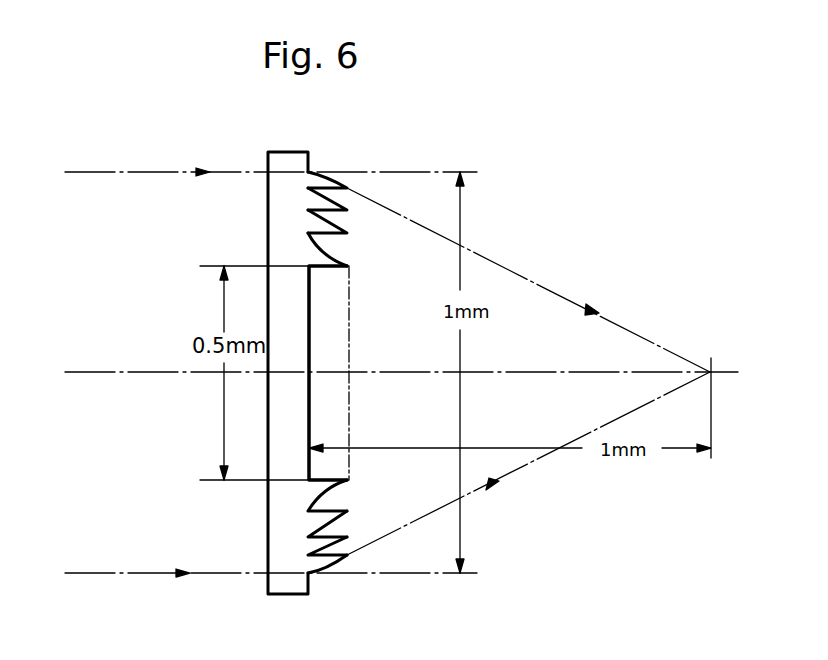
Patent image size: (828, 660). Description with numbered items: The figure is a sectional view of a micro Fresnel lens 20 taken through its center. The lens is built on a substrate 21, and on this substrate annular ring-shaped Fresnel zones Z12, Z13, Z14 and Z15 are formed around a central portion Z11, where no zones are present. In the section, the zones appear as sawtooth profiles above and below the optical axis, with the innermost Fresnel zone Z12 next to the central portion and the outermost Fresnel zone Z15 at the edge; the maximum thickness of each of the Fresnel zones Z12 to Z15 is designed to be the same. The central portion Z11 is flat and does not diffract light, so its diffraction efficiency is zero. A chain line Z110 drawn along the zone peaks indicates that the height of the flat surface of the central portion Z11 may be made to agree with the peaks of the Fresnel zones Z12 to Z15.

The micro Fresnel lens 20 is at (250, 155).
The substrate 21 is at (268, 198).
The Fresnel zone Z15 is at (323, 181).
The Fresnel zone Z14 is at (335, 200).
The Fresnel zone Z13 is at (335, 225).
The Fresnel zone Z12 is at (342, 258).
The central portion Z11 is at (310, 336).
The chain line Z110 is at (349, 412).